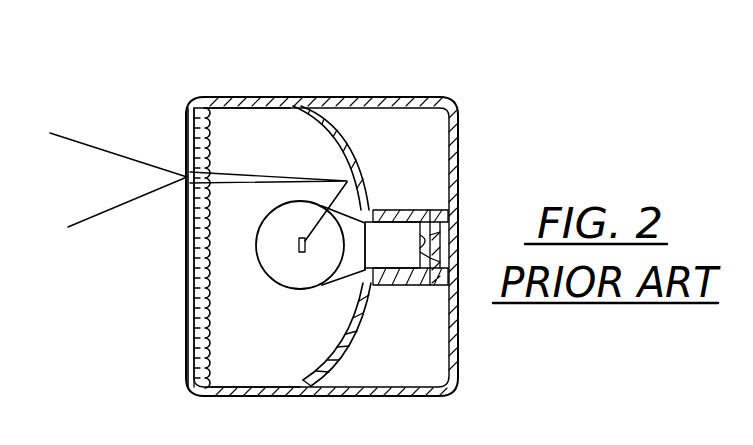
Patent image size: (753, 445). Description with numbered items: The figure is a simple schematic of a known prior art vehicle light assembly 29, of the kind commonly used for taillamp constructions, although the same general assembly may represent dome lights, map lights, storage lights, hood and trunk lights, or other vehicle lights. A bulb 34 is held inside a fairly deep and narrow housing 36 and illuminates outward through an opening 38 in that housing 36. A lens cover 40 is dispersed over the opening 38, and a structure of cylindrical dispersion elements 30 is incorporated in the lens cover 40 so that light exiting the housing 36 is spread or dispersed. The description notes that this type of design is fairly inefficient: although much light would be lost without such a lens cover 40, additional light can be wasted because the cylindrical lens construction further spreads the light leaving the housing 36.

The light assembly 29 is at (395, 87).
The cylindrical dispersion element 30 is at (205, 330).
The bulb 34 is at (283, 297).
The housing 36 is at (355, 396).
The opening 38 is at (236, 108).
The lens cover 40 is at (190, 299).